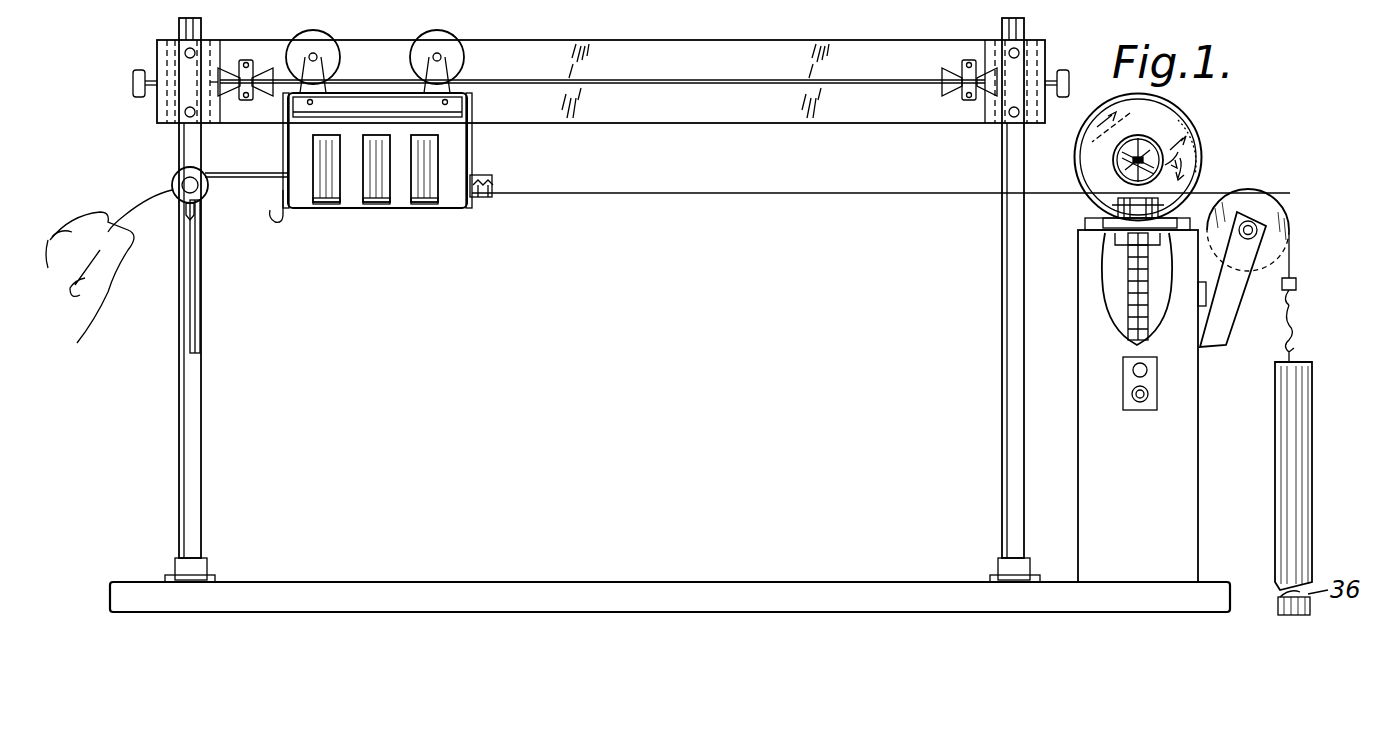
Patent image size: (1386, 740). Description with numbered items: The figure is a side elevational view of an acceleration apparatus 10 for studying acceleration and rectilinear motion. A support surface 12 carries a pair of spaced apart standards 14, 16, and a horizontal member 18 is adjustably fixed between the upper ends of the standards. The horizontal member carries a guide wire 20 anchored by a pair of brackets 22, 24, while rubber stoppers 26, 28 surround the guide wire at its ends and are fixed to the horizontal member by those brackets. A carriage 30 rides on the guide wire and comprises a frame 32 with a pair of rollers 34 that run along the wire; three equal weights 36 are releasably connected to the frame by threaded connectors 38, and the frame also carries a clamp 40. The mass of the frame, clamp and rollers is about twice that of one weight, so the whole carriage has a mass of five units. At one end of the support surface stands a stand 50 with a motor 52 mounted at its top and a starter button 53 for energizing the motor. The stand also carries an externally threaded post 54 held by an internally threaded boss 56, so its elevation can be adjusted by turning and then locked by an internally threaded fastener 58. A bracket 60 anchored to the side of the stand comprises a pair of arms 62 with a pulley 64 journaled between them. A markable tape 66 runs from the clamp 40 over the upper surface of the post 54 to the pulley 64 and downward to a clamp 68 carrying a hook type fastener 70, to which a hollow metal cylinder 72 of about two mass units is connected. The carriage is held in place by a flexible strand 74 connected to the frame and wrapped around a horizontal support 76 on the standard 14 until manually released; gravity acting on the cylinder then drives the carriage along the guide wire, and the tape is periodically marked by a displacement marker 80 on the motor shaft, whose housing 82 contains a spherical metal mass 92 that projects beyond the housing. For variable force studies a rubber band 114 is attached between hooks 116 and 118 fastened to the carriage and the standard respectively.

The acceleration apparatus 10 is at (722, 226).
The support surface 12 is at (790, 592).
The standard 14 is at (195, 445).
The standard 16 is at (1003, 342).
The horizontal member 18 is at (652, 50).
The guide wire 20 is at (768, 80).
The bracket 22 is at (249, 64).
The bracket 24 is at (972, 62).
The rubber stopper 26 is at (228, 60).
The rubber stopper 28 is at (950, 64).
The carriage 30 is at (412, 218).
The frame 32 is at (468, 152).
The rollers 34 is at (446, 50).
The equal weights 36 is at (400, 185).
The threaded connectors 38 is at (425, 205).
The clamp 40 is at (492, 200).
The stand 50 is at (1188, 468).
The motor 52 is at (1158, 130).
The starter button 53 is at (1132, 392).
The externally threaded post 54 is at (1130, 272).
The internally threaded boss 56 is at (1168, 205).
The internally threaded fastener 58 is at (1148, 245).
The bracket 60 is at (1212, 300).
The arms 62 is at (1222, 308).
The pulley 64 is at (1255, 205).
The markable tape 66 is at (905, 193).
The clamp 68 is at (1296, 282).
The hook type fastener 70 is at (1298, 340).
The hollow metal cylinder 72 is at (1305, 462).
The flexible strand 74 is at (230, 178).
The horizontal support 76 is at (178, 170).
The displacement marker 80 is at (1185, 143).
The housing 82 is at (1115, 167).
The spherical metal mass 92 is at (1128, 152).
The rubber band 114 is at (200, 300).
The hook 116 is at (278, 218).
The hook 118 is at (196, 212).